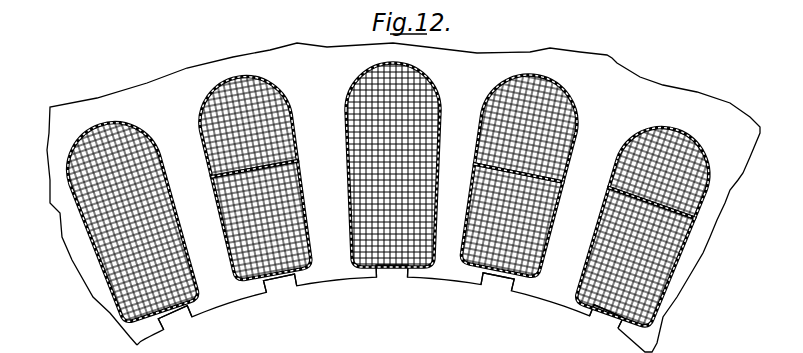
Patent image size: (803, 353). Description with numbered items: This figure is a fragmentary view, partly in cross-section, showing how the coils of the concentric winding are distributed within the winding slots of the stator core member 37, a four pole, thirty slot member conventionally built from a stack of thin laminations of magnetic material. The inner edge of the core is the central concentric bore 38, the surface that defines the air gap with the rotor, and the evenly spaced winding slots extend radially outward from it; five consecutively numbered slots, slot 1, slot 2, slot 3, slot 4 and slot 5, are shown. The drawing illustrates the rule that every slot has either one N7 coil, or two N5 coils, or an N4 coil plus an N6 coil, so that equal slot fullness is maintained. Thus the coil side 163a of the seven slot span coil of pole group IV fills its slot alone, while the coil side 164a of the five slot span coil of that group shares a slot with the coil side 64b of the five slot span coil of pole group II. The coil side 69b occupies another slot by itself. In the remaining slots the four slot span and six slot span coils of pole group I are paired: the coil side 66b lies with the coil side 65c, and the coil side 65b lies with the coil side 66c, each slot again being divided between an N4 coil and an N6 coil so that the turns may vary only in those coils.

The stator core member 37 is at (663, 82).
The central concentric bore 38 is at (437, 285).
The winding slot 1 is at (175, 321).
The winding slot 2 is at (280, 287).
The winding slot 3 is at (392, 278).
The winding slot 4 is at (497, 287).
The winding slot 5 is at (607, 322).
The coil side of coil 163 163a is at (123, 152).
The coil side of coil 164 164a is at (262, 95).
The coil side of coil 64 64b is at (285, 250).
The coil side of coil 69 69b is at (415, 105).
The coil side of coil 66 66b is at (557, 113).
The coil side of coil 65 65c is at (518, 247).
The coil side of coil 65 65b is at (695, 157).
The coil side of coil 66 66c is at (657, 267).